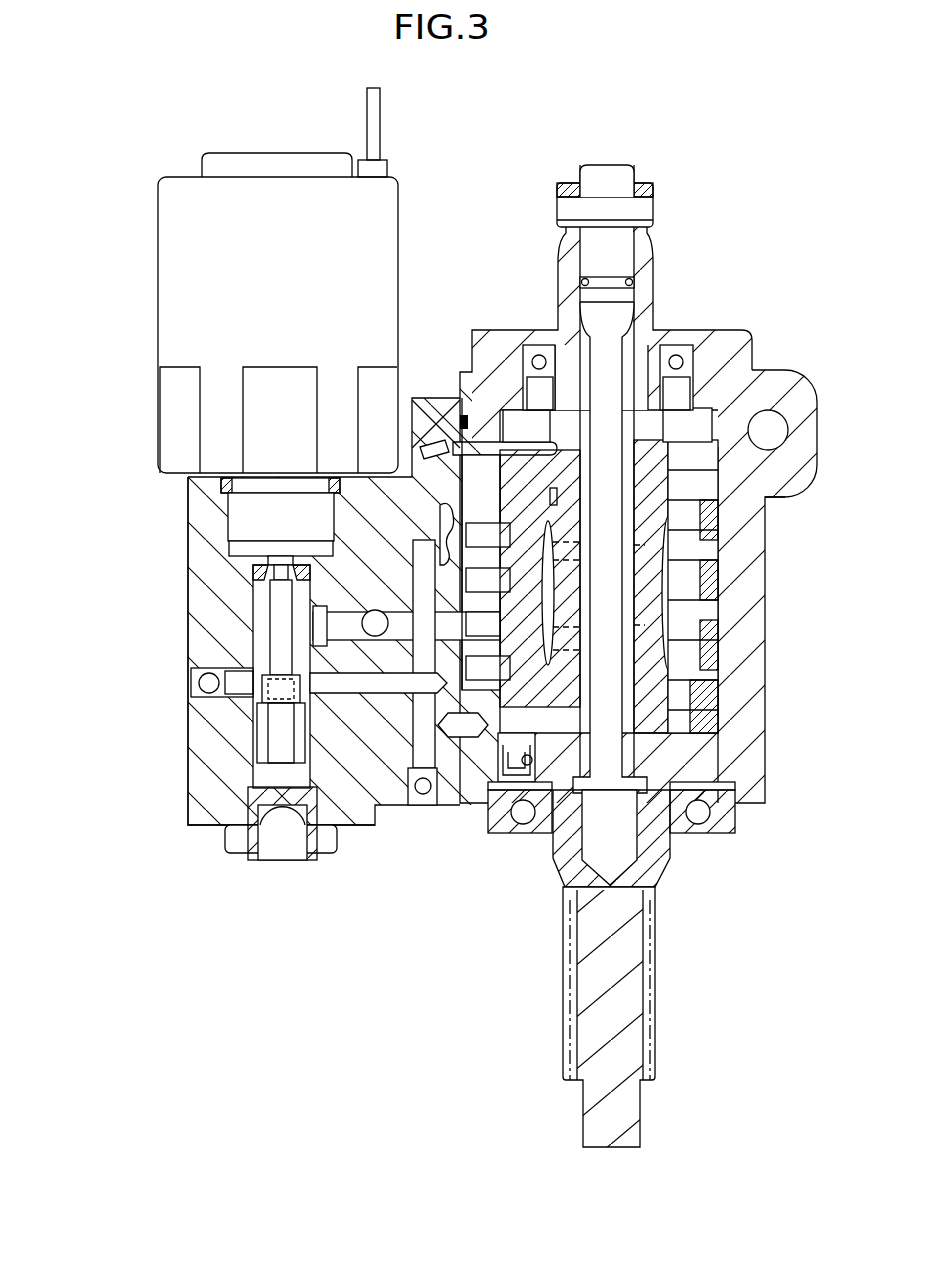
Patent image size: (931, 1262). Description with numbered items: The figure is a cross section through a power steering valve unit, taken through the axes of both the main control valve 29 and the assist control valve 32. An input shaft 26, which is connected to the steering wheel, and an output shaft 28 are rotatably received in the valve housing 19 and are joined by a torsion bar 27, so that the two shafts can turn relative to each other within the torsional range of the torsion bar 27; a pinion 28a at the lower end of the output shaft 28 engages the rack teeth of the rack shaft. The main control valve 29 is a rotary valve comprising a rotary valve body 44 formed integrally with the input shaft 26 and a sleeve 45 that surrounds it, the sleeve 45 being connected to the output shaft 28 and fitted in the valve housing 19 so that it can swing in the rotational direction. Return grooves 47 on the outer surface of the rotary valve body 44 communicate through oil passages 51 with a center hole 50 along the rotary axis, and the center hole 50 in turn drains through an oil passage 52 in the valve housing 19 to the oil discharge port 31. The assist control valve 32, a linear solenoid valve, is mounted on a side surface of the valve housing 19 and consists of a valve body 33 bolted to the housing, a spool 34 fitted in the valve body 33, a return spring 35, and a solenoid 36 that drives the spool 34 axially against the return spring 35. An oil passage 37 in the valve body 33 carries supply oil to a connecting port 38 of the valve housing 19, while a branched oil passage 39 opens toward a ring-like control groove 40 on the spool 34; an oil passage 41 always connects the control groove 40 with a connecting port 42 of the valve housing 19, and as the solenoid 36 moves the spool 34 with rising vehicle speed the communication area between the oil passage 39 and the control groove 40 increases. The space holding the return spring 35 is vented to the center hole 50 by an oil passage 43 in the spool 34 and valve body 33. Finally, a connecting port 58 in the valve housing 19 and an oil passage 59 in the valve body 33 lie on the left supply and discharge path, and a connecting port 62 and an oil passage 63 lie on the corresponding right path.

The valve housing 19 is at (810, 392).
The input shaft 26 is at (640, 187).
The torsion bar 27 is at (614, 345).
The output shaft 28 is at (668, 860).
The pinion 28a is at (665, 1020).
The main control valve 29 is at (722, 528).
The oil discharge port 31 is at (788, 434).
The assist control valve 32 is at (128, 482).
The valve body 33 is at (195, 550).
The spool 34 is at (257, 647).
The return spring 35 is at (255, 725).
The solenoid 36 is at (165, 268).
The oil passage 37 is at (372, 612).
The connecting port 38 is at (483, 624).
The oil passage 39 is at (340, 620).
The control groove 40 is at (253, 660).
The oil passage 41 is at (382, 687).
The connecting port 42 is at (488, 535).
The oil passage 43 is at (253, 593).
The rotary valve body 44 is at (657, 598).
The sleeve 45 is at (700, 702).
The return groove 47 is at (672, 648).
The center hole 50 is at (575, 340).
The oil passage 51 is at (645, 550).
The oil passage 52 is at (707, 420).
The connecting port 58 is at (488, 580).
The oil passage 59 is at (450, 577).
The connecting port 62 is at (488, 668).
The oil passage 63 is at (462, 690).